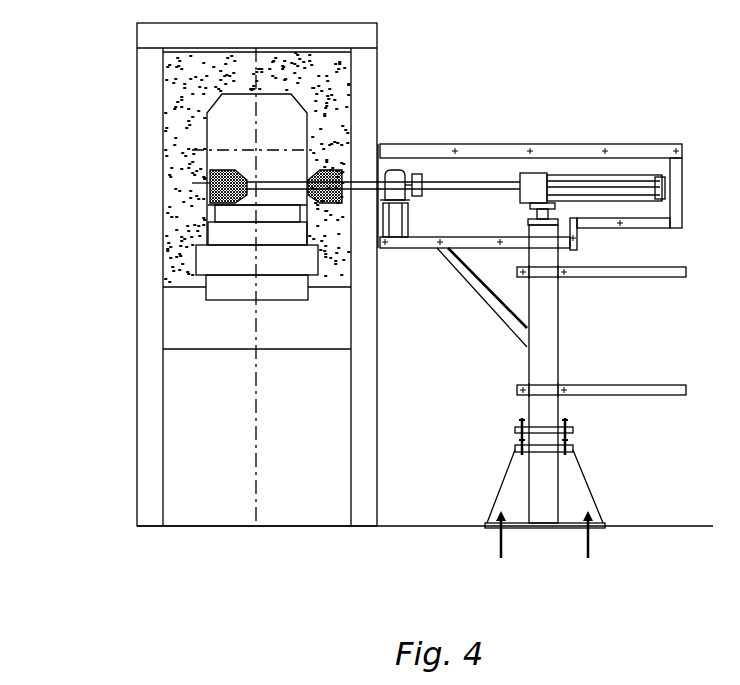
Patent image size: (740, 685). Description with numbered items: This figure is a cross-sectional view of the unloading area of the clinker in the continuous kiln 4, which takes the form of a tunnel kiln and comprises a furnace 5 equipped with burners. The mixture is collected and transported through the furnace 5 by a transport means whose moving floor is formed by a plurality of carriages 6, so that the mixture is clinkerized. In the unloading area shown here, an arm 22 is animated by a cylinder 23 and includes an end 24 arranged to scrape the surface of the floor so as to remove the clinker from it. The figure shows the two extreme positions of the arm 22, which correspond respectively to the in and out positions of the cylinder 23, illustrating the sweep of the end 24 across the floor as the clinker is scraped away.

The continuous kiln 4 is at (116, 86).
The furnace 5 is at (222, 131).
The carriages 6 is at (218, 258).
The arm 22 is at (280, 187).
The cylinder 23 is at (578, 182).
The end 24 is at (222, 177).